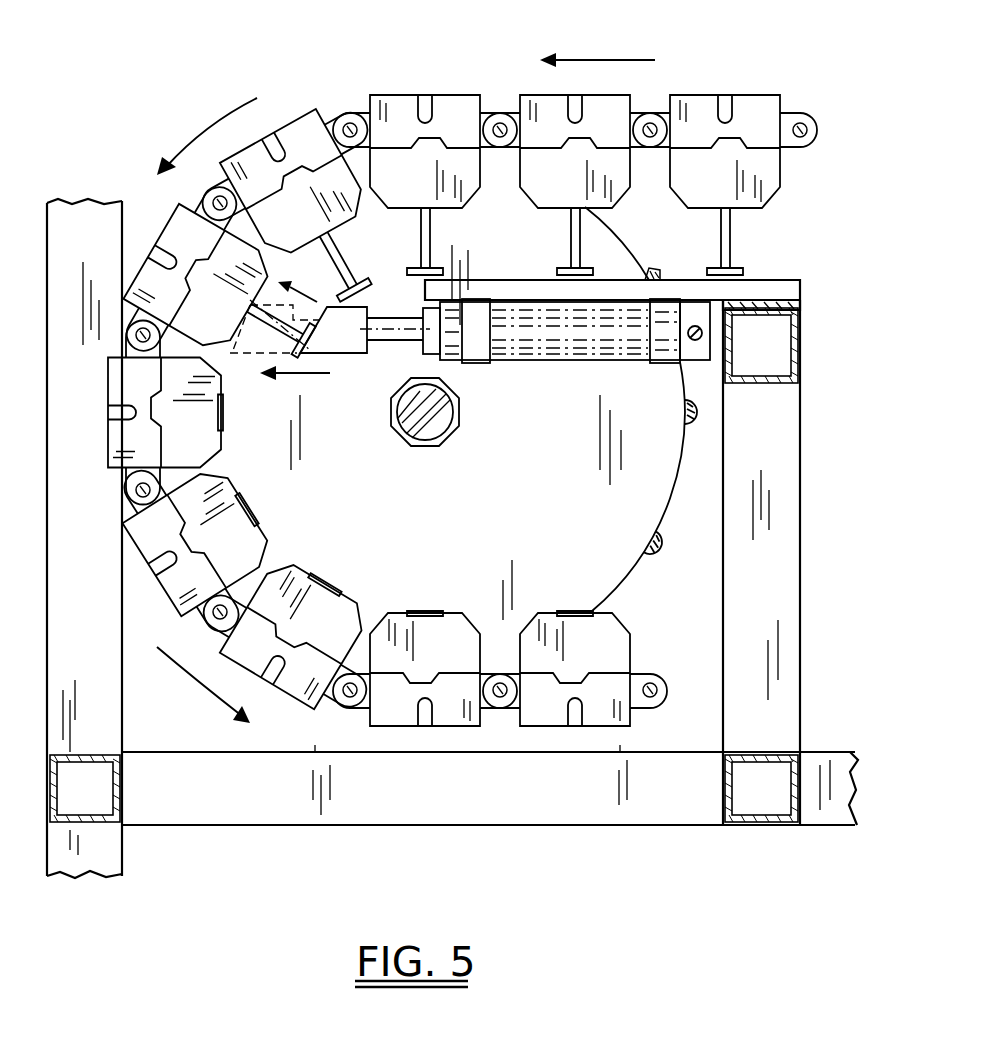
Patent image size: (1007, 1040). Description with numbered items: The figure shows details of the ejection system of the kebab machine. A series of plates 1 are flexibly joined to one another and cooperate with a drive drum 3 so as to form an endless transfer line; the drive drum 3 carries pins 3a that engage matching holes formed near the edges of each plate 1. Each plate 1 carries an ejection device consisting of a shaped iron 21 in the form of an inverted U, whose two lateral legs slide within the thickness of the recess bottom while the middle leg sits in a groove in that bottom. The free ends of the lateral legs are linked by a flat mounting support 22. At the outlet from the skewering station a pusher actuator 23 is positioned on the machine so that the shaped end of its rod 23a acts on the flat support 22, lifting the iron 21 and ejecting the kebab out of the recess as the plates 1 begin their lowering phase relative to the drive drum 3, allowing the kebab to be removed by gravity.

The plate 1 is at (283, 213).
The shaped iron 21 is at (352, 270).
The flat mounting support 22 is at (737, 272).
The pusher actuator 23 is at (560, 358).
The rod 23a is at (392, 345).
The drive drum 3 is at (607, 535).
The pin 3a is at (695, 420).